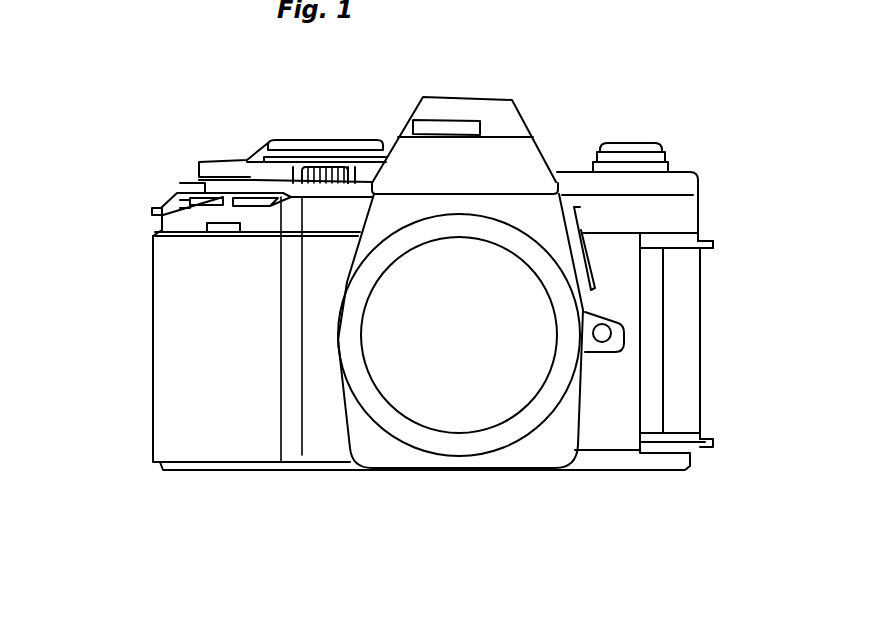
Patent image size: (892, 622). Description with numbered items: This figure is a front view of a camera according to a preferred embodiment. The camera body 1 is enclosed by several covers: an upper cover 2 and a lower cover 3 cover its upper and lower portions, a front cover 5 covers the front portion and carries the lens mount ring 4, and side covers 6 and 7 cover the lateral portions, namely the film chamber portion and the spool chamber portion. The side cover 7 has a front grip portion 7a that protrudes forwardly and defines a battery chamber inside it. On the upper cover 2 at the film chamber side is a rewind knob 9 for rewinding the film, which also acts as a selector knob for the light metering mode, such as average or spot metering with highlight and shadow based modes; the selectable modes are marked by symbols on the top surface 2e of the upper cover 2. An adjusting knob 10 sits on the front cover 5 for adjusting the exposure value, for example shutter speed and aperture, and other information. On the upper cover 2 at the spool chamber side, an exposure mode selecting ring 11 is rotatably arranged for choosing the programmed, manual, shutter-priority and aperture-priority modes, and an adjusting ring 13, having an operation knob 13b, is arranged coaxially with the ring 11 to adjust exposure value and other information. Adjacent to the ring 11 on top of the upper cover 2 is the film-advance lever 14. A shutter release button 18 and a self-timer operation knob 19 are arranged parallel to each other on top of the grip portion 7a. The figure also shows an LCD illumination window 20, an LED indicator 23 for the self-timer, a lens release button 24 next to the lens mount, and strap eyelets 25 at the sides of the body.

The camera body 1 is at (697, 171).
The upper cover 2 is at (680, 205).
The top surface of the upper cover 2e is at (673, 170).
The lower cover 3 is at (667, 463).
The lens mount ring 4 is at (482, 446).
The front cover 5 is at (373, 446).
The side cover 6 is at (683, 337).
The side cover 7 is at (170, 398).
The front grip portion 7a is at (232, 429).
The rewind knob 9 is at (593, 163).
The adjusting knob 10 is at (587, 262).
The exposure mode selecting ring 11 is at (277, 157).
The adjusting ring 13 is at (330, 184).
The operation knob 13b is at (353, 166).
The film-advance lever 14 is at (218, 167).
The shutter release button 18 is at (260, 207).
The self-timer operation knob 19 is at (200, 203).
The LCD illumination window 20 is at (453, 124).
The LED indicator for self-timer 23 is at (222, 229).
The lens release button 24 is at (613, 333).
The strap eyelets 25 is at (157, 207).